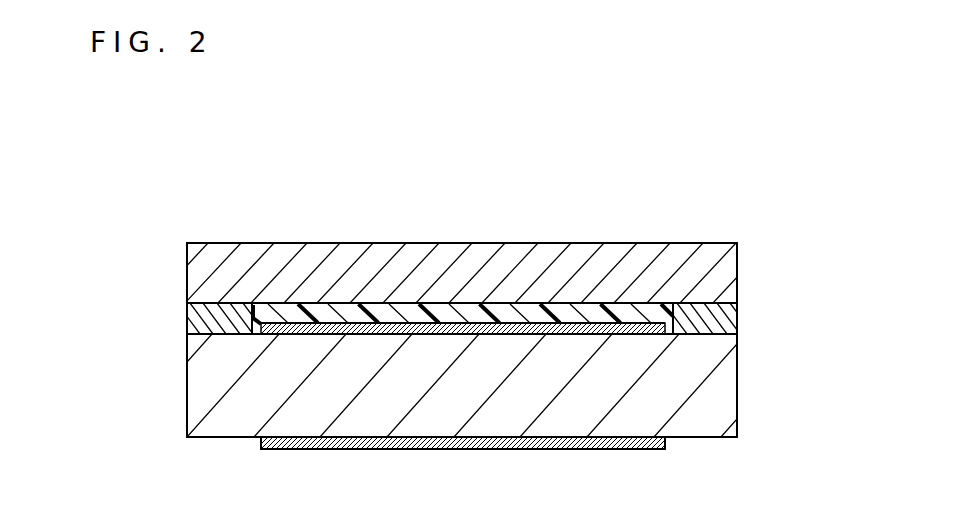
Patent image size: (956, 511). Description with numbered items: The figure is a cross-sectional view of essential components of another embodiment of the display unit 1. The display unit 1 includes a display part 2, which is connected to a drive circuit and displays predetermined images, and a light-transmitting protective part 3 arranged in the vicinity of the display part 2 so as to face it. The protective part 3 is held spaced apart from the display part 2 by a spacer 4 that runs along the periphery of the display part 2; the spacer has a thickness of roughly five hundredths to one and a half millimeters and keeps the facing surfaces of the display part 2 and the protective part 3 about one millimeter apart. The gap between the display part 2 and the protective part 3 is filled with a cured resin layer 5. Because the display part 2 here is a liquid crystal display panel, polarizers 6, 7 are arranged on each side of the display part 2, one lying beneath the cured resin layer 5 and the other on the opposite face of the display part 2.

The display unit 1 is at (180, 129).
The display part 2 is at (738, 379).
The protective part 3 is at (738, 263).
The spacer 4 is at (738, 307).
The cured resin layer 5 is at (405, 320).
The polarizer 6 is at (565, 323).
The polarizer 7 is at (513, 451).